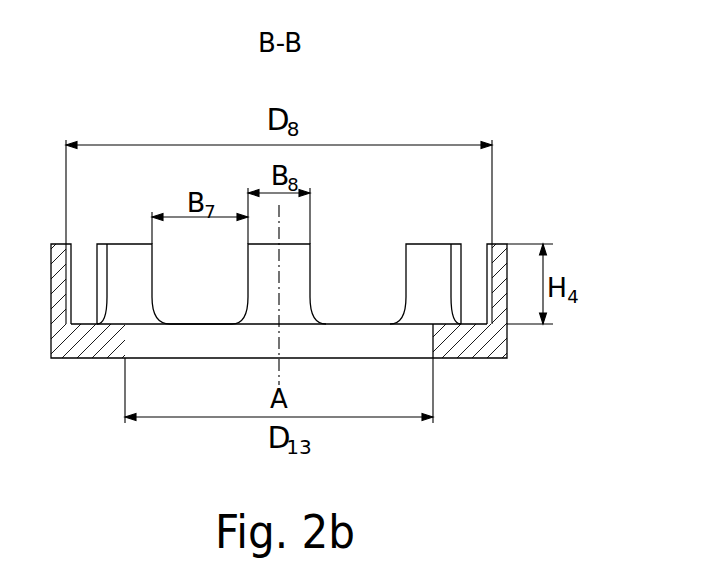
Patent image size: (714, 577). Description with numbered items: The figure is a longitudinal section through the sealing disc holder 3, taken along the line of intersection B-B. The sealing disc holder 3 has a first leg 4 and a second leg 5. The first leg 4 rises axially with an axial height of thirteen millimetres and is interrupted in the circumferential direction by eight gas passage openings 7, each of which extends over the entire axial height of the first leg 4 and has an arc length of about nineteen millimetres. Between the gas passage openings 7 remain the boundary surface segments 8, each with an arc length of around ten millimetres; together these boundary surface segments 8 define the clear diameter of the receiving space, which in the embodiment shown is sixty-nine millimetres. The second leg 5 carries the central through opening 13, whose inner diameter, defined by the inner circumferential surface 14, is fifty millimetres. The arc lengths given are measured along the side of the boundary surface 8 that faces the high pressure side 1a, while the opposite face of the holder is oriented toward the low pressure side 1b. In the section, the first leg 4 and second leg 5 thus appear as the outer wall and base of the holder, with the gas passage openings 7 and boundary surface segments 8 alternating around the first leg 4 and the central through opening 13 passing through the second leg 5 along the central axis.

The high pressure side 1a is at (298, 93).
The low pressure side 1b is at (301, 488).
The sealing disc holder 3 is at (355, 115).
The first leg 4 is at (501, 247).
The second leg 5 is at (500, 338).
The gas passage opening 7 is at (190, 302).
The boundary surface 8 is at (300, 277).
The central through opening 13 is at (345, 343).
The inner circumferential surface 14 is at (433, 338).